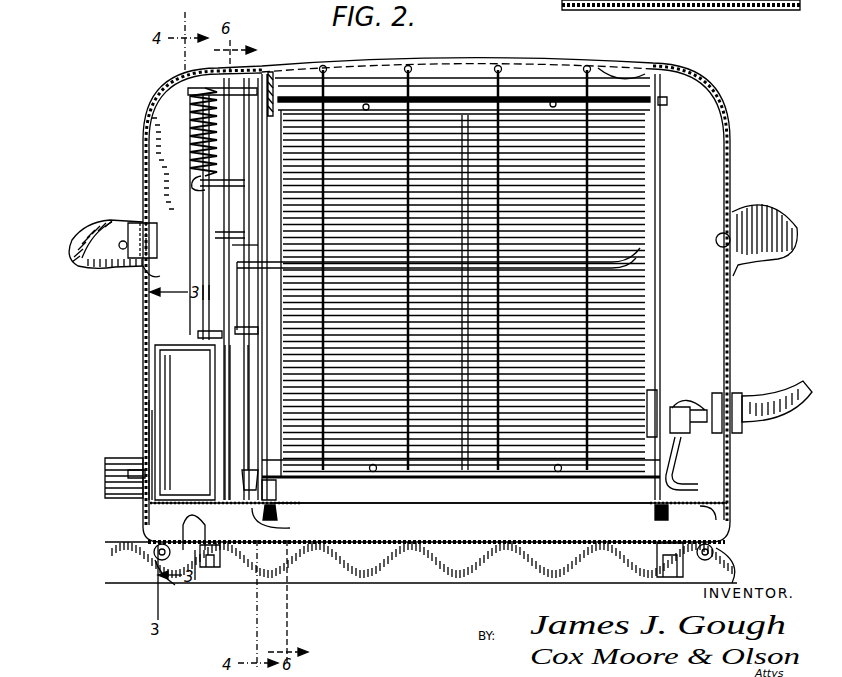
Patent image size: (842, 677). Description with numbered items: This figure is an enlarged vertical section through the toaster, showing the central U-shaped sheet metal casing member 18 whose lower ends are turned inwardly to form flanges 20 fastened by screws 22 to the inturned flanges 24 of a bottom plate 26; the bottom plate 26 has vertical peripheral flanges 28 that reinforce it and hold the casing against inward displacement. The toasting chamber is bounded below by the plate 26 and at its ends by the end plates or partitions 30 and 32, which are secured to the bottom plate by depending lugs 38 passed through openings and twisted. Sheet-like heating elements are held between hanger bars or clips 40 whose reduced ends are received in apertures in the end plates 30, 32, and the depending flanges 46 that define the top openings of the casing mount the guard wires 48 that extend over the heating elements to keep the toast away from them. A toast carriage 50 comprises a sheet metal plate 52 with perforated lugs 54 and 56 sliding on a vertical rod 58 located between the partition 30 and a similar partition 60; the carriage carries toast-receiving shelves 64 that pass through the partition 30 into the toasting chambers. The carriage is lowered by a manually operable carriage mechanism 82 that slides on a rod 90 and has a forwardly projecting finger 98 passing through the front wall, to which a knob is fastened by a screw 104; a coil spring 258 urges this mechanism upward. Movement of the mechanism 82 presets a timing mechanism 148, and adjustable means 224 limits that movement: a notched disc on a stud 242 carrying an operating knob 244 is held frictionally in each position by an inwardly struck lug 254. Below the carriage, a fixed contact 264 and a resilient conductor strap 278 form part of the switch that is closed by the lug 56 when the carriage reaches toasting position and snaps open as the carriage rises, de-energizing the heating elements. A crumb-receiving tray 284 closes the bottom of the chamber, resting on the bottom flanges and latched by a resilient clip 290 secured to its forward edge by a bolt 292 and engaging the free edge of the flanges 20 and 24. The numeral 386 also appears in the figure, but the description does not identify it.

The central casing member 18 is at (695, 68).
The flanges 20 is at (152, 553).
The screws 22 is at (158, 560).
The inturned flanges 24 is at (145, 532).
The bottom plate 26 is at (418, 505).
The vertical peripheral flanges 28 is at (142, 517).
The end plate 30 is at (278, 492).
The end plate 32 is at (662, 166).
The depending lugs 38 is at (278, 516).
The hanger bars 40 is at (440, 103).
The depending flanges 46 is at (568, 70).
The guard wires 48 is at (590, 372).
The toast carriage 50 is at (258, 175).
The sheet metal plate 52 is at (232, 236).
The perforated lug 54 is at (240, 200).
The perforated lug 56 is at (198, 333).
The rod 58 is at (246, 248).
The partition 60 is at (228, 414).
The toast receiving shelves 64 is at (630, 256).
The manually operable carriage mechanism 82 is at (180, 100).
The rod 90 is at (205, 296).
The finger 98 is at (150, 272).
The screw 104 is at (122, 262).
The timing mechanism 148 is at (145, 366).
The adjustable means 224 is at (150, 400).
The stud 242 is at (130, 470).
The operating knob 244 is at (118, 476).
The protuberance 254 is at (142, 424).
The coil spring 258 is at (200, 132).
The fixed contact 264 is at (292, 528).
The resilient conductor strap 278 is at (242, 470).
The crumb-receiving tray 284 is at (420, 545).
The resilient clip 290 is at (195, 582).
The bolt 292 is at (245, 545).
The flange 386 is at (728, 506).